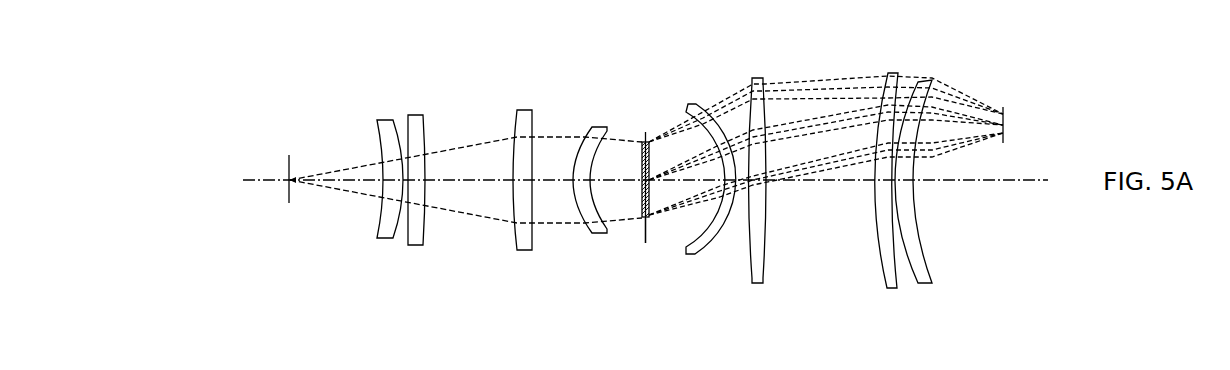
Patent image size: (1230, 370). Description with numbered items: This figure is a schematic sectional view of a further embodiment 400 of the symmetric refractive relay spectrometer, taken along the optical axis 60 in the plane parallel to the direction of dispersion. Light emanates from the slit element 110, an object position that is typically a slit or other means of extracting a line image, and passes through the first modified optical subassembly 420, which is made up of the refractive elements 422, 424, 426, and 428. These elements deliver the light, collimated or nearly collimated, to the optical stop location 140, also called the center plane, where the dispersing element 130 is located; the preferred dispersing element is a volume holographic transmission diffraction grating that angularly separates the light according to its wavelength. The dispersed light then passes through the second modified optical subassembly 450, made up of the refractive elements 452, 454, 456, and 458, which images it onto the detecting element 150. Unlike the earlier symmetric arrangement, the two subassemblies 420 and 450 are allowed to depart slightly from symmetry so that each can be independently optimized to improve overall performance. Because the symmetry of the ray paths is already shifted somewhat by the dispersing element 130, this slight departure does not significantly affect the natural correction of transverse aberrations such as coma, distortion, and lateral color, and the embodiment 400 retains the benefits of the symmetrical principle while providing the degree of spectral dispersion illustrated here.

The further embodiment 400 is at (325, 58).
The optical axis 60 is at (265, 181).
The slit element 110 is at (288, 173).
The optical subassembly 420 is at (487, 192).
The refractive element 422 is at (387, 127).
The refractive element 424 is at (415, 115).
The refractive element 426 is at (525, 117).
The refractive element 428 is at (602, 128).
The optical stop location 140 is at (645, 131).
The dispersing element 130 is at (642, 214).
The optical subassembly 450 is at (816, 192).
The refractive element 452 is at (692, 107).
The refractive element 454 is at (755, 78).
The refractive element 456 is at (893, 73).
The refractive element 458 is at (930, 81).
The detecting element 150 is at (1012, 108).